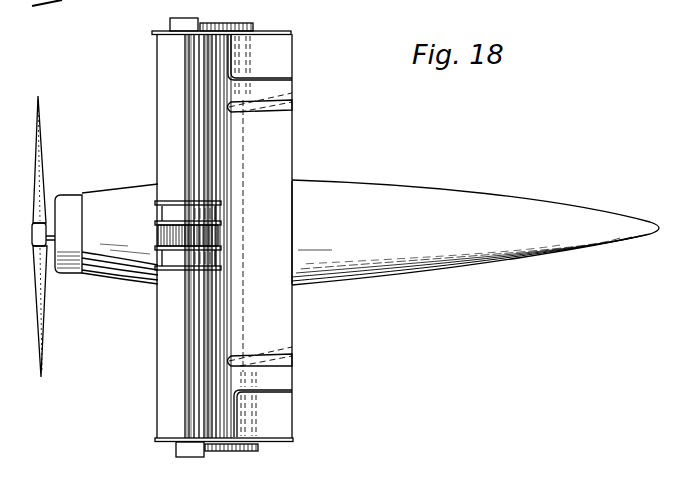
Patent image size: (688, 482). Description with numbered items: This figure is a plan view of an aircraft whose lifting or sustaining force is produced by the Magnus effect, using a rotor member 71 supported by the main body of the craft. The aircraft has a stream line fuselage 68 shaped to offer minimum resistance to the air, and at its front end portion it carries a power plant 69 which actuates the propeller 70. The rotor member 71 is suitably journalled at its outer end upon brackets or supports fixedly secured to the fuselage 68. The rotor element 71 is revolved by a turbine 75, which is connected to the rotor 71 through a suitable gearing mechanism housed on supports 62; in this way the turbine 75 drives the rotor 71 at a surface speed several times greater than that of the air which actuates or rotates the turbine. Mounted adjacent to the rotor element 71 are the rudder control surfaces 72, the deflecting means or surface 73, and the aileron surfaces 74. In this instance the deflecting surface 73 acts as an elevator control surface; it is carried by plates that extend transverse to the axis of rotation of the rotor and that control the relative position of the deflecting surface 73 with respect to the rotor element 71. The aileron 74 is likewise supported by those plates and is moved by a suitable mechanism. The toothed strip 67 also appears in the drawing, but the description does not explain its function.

The supports 62 is at (158, 204).
The gear rack strip 67 is at (205, 30).
The fuselage 68 is at (386, 182).
The power plant 69 is at (85, 195).
The propeller 70 is at (45, 139).
The rotor member 71 is at (158, 86).
The rudder control surfaces 72 is at (282, 96).
The deflecting surface 73 is at (288, 147).
The aileron surfaces 74 is at (280, 42).
The turbine 75 is at (160, 240).